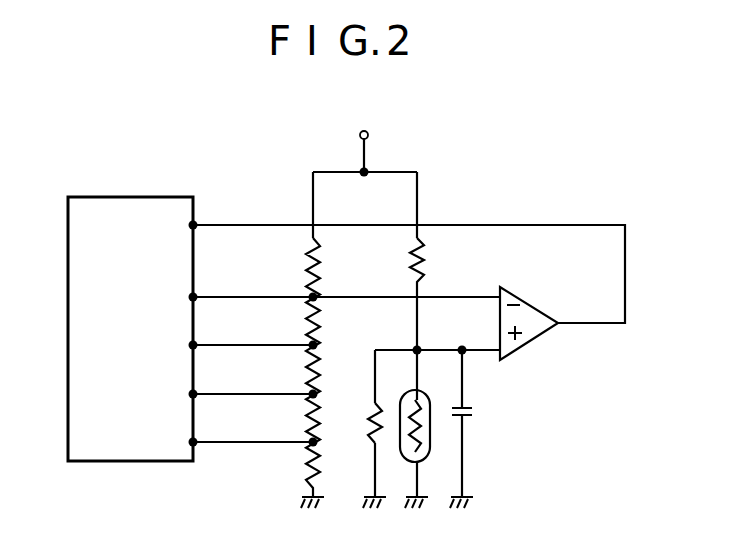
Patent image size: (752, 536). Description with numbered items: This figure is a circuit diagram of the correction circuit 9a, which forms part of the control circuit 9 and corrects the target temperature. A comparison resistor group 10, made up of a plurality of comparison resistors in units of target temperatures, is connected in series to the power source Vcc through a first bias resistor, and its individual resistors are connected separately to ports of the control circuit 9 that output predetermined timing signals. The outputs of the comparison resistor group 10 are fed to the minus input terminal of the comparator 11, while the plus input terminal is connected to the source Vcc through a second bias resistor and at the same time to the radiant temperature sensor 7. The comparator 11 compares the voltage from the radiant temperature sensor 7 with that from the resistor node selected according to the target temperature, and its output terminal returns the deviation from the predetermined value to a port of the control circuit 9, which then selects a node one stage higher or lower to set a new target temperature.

The control circuit 9 is at (132, 197).
The correction circuit 9a is at (487, 202).
The comparison resistor group 10 is at (322, 327).
The radiant temperature sensor 7 is at (425, 395).
The comparator 11 is at (537, 341).